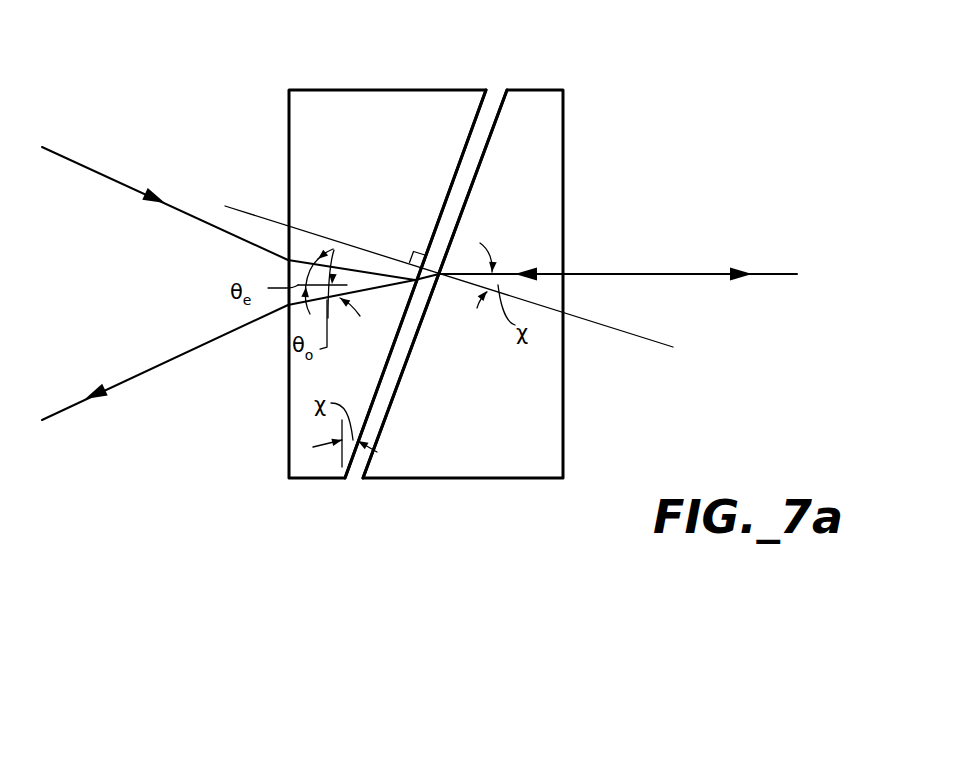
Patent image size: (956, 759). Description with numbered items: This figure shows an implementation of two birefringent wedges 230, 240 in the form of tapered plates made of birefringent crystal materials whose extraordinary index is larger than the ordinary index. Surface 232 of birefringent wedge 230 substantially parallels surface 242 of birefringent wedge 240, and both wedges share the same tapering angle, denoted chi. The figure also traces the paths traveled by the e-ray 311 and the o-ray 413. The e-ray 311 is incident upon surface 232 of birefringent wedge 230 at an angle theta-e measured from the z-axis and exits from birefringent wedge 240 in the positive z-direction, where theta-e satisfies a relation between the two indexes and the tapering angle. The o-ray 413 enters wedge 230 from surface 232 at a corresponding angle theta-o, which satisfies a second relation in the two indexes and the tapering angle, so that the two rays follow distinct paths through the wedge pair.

The birefringent wedge 230 is at (380, 88).
The surface of birefringent wedge 230 232 is at (485, 99).
The birefringent wedge 240 is at (543, 88).
The surface of birefringent wedge 240 242 is at (504, 100).
The e-ray 311 is at (190, 218).
The o-ray 413 is at (192, 352).